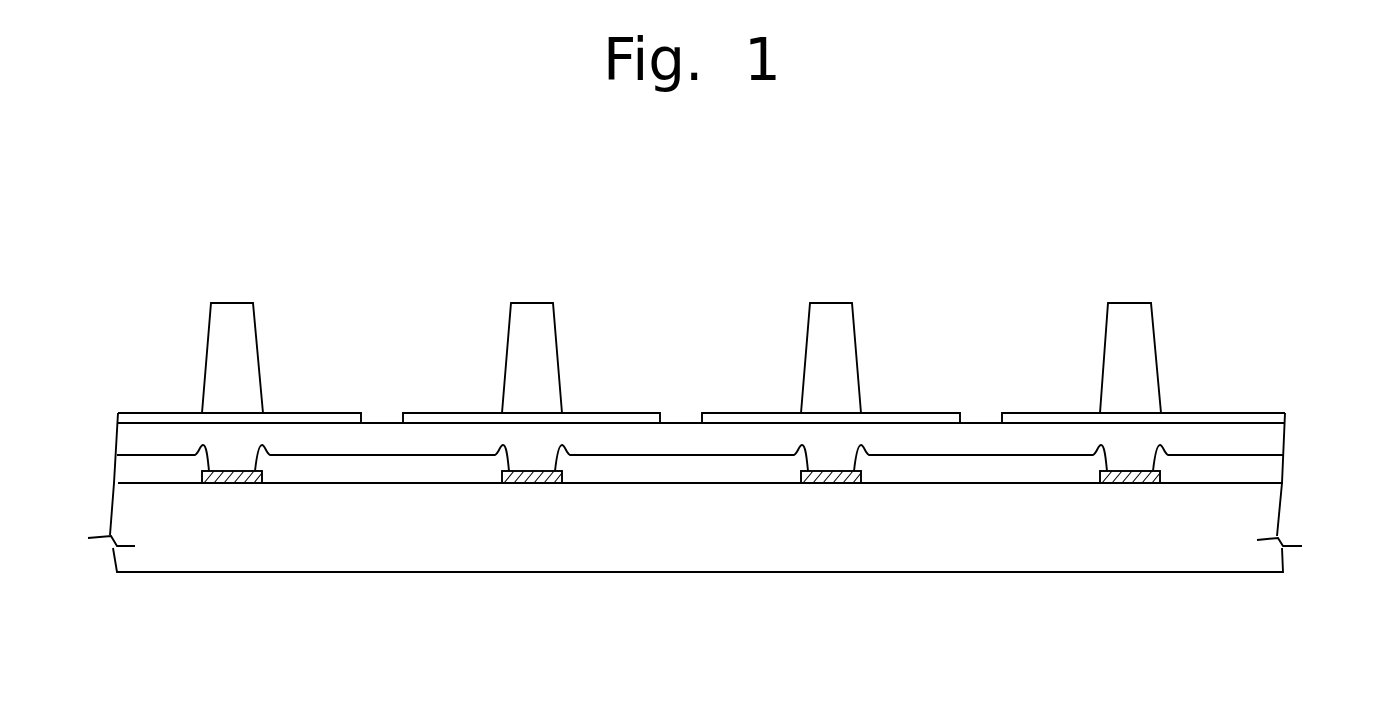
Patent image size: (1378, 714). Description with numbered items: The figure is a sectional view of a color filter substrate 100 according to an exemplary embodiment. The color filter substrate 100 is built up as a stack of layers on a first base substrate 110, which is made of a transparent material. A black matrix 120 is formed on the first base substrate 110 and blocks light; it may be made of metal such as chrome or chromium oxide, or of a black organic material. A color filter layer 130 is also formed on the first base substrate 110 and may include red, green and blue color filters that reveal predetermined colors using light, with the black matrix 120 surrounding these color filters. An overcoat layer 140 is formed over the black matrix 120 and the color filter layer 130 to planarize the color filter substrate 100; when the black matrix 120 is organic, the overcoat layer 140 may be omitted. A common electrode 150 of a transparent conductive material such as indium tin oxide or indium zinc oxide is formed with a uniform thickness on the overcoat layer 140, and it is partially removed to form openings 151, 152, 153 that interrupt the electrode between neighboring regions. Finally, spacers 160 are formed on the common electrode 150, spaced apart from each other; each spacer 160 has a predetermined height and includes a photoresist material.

The color filter substrate 100 is at (995, 222).
The first base substrate 110 is at (1270, 517).
The black matrix 120 is at (1130, 483).
The color filter layer 130 is at (1275, 472).
The overcoat layer 140 is at (1275, 437).
The common electrode 150 is at (1285, 418).
The opening 151 is at (380, 416).
The opening 152 is at (680, 416).
The opening 153 is at (980, 416).
The spacer 160 is at (1129, 312).